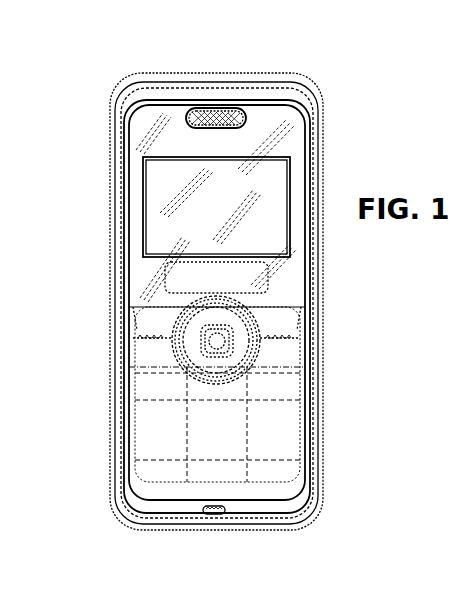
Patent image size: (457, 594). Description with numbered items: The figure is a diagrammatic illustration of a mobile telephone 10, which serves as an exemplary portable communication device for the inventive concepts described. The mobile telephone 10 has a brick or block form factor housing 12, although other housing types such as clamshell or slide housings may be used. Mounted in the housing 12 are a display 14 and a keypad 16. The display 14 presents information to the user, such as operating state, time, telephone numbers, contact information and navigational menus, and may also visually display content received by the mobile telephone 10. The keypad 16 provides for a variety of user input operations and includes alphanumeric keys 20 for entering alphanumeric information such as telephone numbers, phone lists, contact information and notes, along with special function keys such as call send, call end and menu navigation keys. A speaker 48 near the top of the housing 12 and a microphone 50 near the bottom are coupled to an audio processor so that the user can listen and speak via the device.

The mobile telephone 10 is at (64, 75).
The housing 12 is at (112, 156).
The display 14 is at (160, 216).
The keypad 16 is at (103, 448).
The alphanumeric keys 20 is at (197, 350).
The speaker 48 is at (200, 106).
The microphone 50 is at (216, 514).